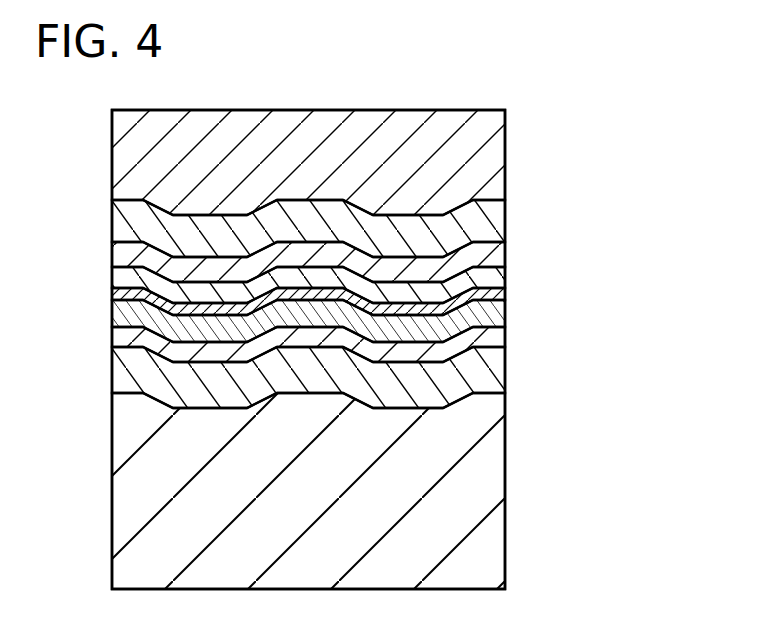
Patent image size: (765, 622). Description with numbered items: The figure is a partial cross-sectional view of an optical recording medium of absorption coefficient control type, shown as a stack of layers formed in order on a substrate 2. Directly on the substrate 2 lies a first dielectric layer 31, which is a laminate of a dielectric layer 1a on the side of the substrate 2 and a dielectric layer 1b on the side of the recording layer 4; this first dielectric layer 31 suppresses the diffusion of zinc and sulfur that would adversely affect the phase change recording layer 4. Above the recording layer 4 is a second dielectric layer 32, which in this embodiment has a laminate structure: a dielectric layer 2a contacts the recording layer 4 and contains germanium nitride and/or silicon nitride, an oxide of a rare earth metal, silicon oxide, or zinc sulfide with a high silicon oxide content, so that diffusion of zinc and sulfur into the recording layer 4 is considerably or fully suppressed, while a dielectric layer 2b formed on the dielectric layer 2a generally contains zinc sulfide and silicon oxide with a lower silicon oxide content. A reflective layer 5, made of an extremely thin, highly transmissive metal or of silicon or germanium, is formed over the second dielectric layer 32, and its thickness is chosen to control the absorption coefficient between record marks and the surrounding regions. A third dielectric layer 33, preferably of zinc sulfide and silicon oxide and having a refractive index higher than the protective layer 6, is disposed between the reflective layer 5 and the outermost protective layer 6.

The protective layer 6 is at (505, 167).
The third dielectric layer 33 is at (505, 228).
The reflective layer 5 is at (505, 252).
The dielectric layer 2b is at (505, 280).
The dielectric layer 2a is at (505, 292).
The second dielectric layer 32 is at (420, 270).
The recording layer 4 is at (505, 311).
The dielectric layer 1b is at (505, 333).
The dielectric layer 1a is at (505, 376).
The first dielectric layer 31 is at (420, 398).
The substrate 2 is at (505, 483).